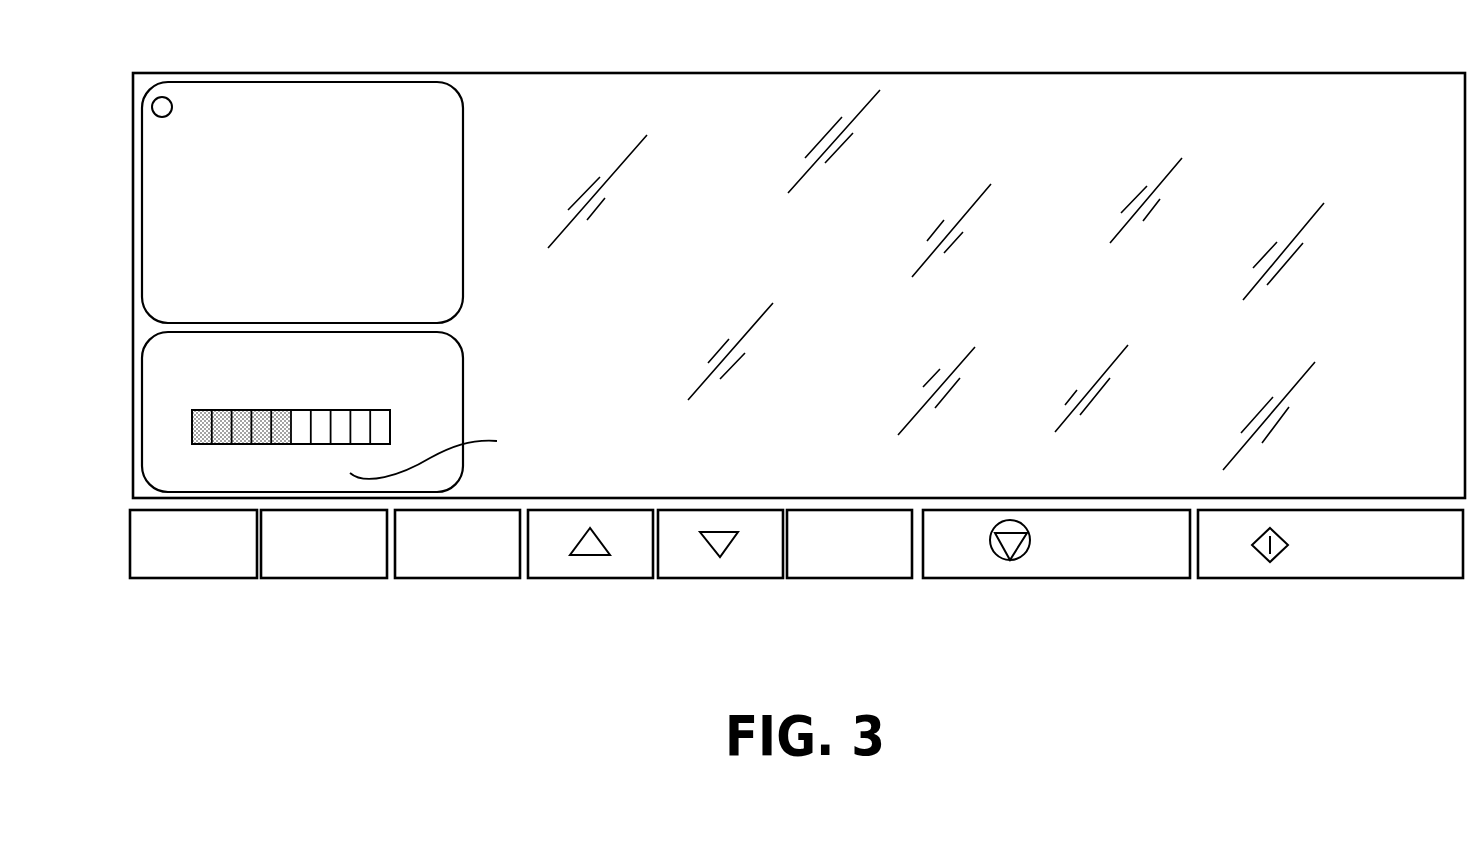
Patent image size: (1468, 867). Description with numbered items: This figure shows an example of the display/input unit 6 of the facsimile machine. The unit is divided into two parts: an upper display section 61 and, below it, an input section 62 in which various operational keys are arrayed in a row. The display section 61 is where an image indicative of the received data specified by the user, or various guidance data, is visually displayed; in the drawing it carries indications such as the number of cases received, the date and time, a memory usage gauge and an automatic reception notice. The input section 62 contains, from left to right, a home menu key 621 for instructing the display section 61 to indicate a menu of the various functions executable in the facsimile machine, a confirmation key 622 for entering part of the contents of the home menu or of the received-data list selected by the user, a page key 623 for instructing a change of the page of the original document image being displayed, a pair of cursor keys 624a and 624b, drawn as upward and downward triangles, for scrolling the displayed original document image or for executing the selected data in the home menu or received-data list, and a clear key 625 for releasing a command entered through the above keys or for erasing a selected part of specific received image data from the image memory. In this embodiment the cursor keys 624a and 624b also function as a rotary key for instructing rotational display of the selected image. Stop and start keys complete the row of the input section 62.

The display/input unit 6 is at (1329, 23).
The display section 61 is at (988, 58).
The input section 62 is at (1054, 618).
The home menu key 621 is at (213, 578).
The confirmation key 622 is at (352, 661).
The page key 623 is at (442, 578).
The cursor key 624a is at (570, 578).
The cursor key 624b is at (708, 578).
The clear key 625 is at (853, 578).